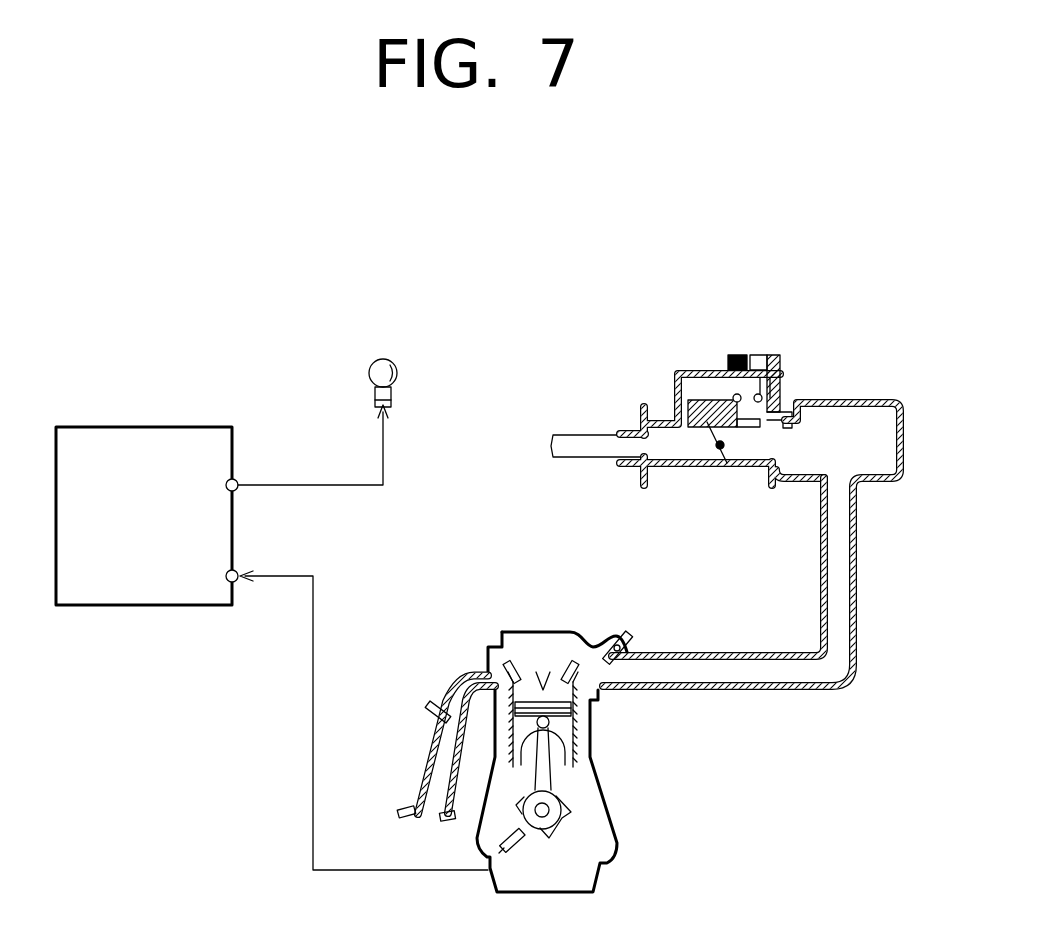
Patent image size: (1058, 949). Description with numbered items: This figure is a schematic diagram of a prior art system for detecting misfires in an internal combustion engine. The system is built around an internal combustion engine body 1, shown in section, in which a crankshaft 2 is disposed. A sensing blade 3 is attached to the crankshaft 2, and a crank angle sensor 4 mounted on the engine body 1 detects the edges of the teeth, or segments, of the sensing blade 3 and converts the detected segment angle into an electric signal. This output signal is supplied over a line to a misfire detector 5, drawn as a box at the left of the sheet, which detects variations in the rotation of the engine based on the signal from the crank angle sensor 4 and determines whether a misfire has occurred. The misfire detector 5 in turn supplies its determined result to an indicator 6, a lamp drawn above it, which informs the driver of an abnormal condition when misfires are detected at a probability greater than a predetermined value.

The internal combustion engine body 1 is at (607, 800).
The crankshaft 2 is at (552, 800).
The sensing blade 3 is at (565, 835).
The crank angle sensor 4 is at (512, 852).
The misfire detector 5 is at (151, 425).
The indicator 6 is at (387, 357).